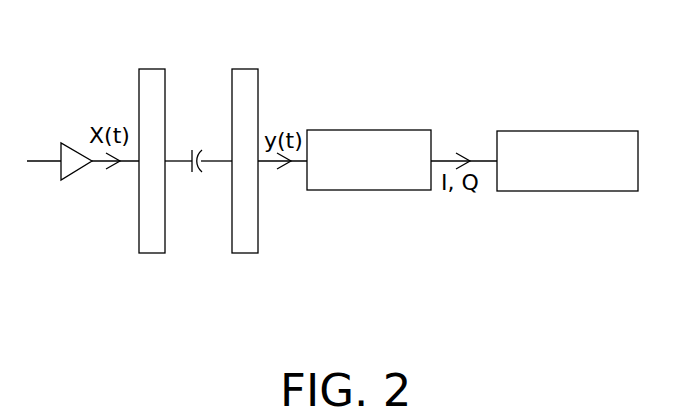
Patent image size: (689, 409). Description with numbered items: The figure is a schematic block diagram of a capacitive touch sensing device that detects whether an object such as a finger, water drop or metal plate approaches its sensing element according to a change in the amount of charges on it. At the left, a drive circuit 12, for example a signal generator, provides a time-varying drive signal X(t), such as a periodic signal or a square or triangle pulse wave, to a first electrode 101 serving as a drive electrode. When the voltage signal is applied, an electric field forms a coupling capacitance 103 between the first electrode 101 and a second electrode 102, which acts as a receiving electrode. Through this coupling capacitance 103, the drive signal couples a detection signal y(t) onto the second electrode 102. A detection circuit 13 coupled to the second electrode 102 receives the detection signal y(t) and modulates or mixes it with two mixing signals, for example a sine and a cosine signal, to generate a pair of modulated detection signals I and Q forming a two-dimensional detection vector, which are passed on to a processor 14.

The drive circuit 12 is at (72, 143).
The first electrode 101 is at (153, 69).
The second electrode 102 is at (246, 69).
The coupling capacitance 103 is at (197, 178).
The detection circuit 13 is at (370, 130).
The processor 14 is at (570, 131).